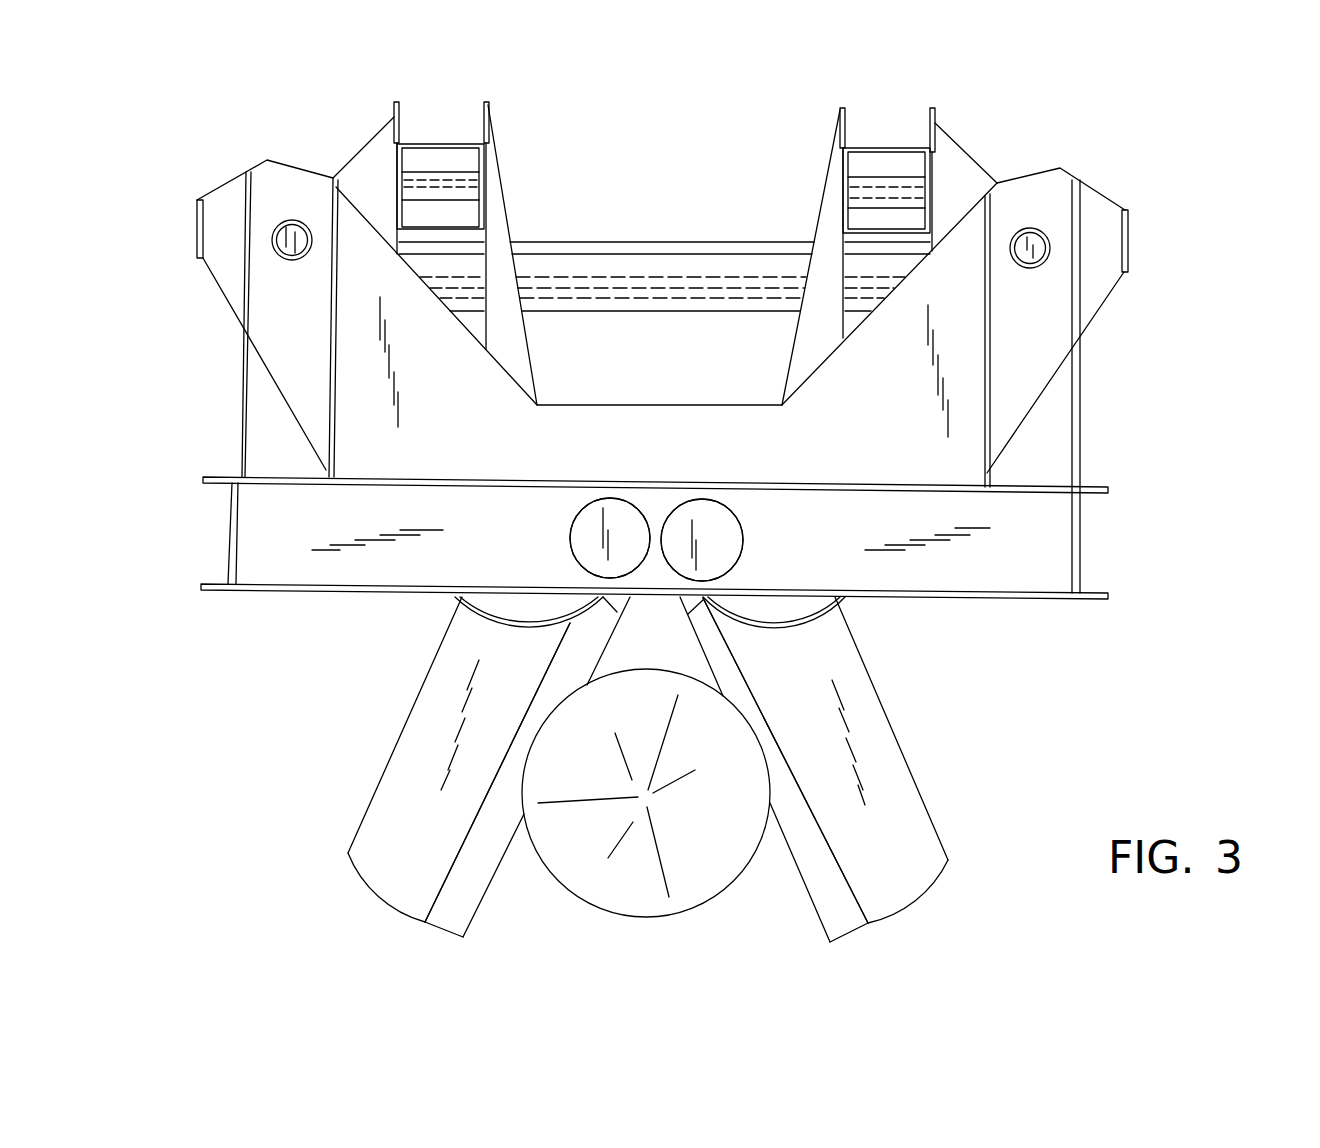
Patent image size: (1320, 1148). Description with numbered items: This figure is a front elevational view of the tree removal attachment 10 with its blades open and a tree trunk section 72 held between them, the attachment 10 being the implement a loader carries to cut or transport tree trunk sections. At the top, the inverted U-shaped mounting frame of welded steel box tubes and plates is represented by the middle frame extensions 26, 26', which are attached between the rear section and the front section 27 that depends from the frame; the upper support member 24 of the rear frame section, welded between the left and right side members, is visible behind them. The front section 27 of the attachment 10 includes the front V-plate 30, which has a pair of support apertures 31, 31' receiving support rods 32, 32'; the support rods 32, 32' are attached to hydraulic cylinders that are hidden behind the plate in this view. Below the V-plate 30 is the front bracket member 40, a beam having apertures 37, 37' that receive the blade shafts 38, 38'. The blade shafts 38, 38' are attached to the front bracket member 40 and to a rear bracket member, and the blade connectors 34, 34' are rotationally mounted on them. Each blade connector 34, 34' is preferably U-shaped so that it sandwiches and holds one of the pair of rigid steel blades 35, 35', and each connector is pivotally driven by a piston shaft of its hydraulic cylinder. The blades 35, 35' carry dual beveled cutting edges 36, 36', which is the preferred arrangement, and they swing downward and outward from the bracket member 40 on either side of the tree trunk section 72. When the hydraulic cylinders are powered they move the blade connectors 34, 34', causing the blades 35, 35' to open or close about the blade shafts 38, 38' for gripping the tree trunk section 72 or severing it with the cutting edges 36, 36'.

The tree removal attachment 10 is at (200, 150).
The upper support member 24 is at (643, 268).
The middle frame extension 26 is at (441, 214).
The middle frame extension 26' is at (918, 209).
The front section 27 is at (1097, 187).
The front V-plate 30 is at (1093, 273).
The support aperture 31 is at (289, 256).
The support aperture 31' is at (1035, 267).
The support rod 32 is at (283, 219).
The support rod 32' is at (1027, 230).
The blade connector 34 is at (494, 615).
The blade connector 34' is at (799, 617).
The blade 35 is at (452, 759).
The blade 35' is at (841, 760).
The dual beveled cutting edge 36 is at (527, 767).
The dual beveled cutting edge 36' is at (774, 769).
The aperture 37 is at (576, 538).
The aperture 37' is at (738, 541).
The blade shaft 38 is at (584, 538).
The blade shaft 38' is at (731, 540).
The front bracket member 40 is at (1047, 555).
The tree trunk section 72 is at (709, 851).